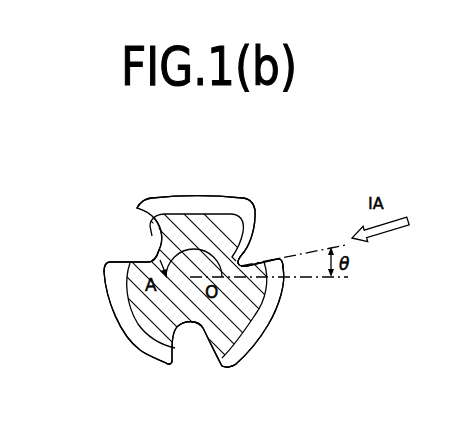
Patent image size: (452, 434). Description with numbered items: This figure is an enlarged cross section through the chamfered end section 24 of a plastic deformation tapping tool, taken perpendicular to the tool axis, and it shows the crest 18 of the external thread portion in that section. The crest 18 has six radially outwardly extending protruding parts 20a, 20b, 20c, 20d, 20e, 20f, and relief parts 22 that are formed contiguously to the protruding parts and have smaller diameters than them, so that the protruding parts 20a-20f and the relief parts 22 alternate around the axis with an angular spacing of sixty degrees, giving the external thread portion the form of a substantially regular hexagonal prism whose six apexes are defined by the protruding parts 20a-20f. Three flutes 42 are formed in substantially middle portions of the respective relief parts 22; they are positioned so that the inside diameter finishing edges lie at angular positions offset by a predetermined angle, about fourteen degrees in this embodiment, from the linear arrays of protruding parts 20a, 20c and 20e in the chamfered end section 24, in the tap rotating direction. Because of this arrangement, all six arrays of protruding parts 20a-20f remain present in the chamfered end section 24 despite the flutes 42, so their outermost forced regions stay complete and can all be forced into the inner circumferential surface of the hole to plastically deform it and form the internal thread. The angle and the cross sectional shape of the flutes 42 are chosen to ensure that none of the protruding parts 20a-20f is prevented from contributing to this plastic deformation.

The crest 18 is at (110, 307).
The protruding part 20a is at (283, 286).
The protruding part 20b is at (240, 360).
The protruding part 20c is at (147, 363).
The protruding part 20d is at (106, 268).
The protruding part 20e is at (148, 202).
The protruding part 20f is at (242, 205).
The relief part 22 is at (197, 207).
The chamfered end section 24 is at (298, 188).
The flute 42 is at (140, 258).